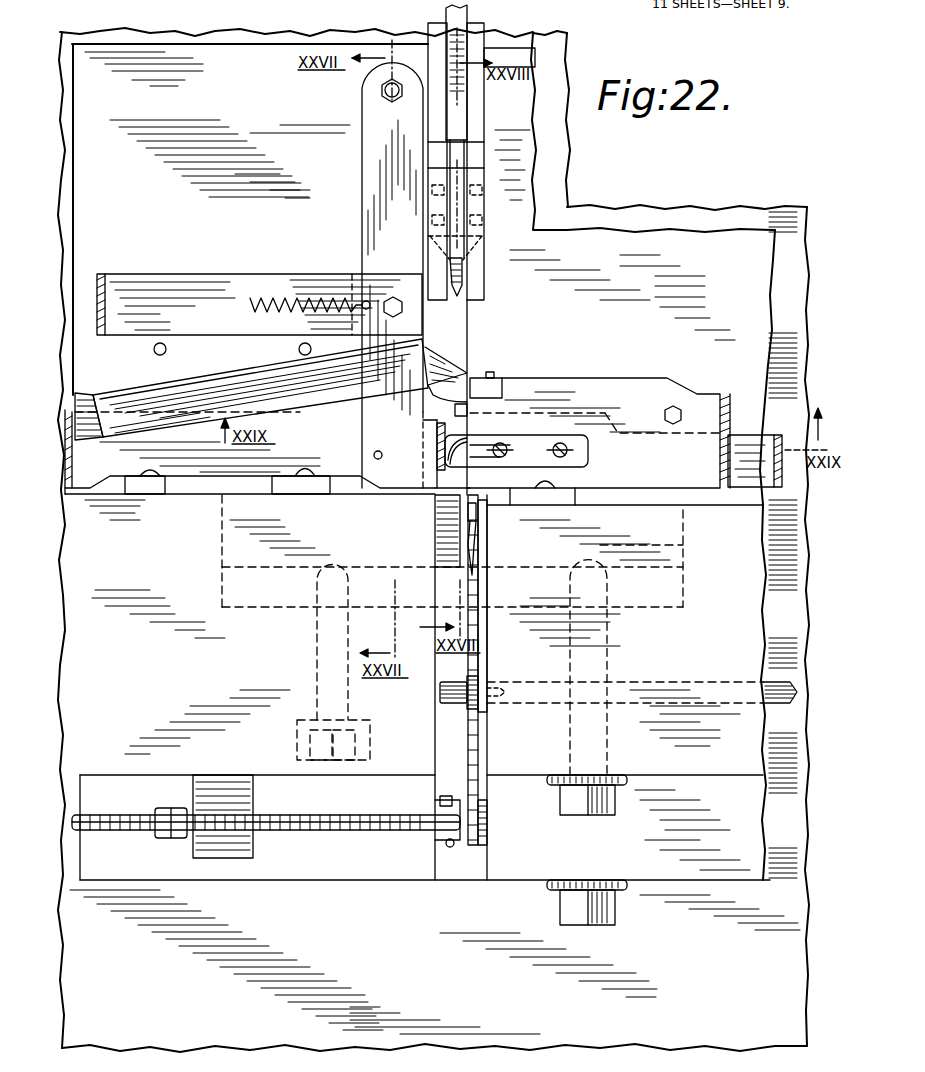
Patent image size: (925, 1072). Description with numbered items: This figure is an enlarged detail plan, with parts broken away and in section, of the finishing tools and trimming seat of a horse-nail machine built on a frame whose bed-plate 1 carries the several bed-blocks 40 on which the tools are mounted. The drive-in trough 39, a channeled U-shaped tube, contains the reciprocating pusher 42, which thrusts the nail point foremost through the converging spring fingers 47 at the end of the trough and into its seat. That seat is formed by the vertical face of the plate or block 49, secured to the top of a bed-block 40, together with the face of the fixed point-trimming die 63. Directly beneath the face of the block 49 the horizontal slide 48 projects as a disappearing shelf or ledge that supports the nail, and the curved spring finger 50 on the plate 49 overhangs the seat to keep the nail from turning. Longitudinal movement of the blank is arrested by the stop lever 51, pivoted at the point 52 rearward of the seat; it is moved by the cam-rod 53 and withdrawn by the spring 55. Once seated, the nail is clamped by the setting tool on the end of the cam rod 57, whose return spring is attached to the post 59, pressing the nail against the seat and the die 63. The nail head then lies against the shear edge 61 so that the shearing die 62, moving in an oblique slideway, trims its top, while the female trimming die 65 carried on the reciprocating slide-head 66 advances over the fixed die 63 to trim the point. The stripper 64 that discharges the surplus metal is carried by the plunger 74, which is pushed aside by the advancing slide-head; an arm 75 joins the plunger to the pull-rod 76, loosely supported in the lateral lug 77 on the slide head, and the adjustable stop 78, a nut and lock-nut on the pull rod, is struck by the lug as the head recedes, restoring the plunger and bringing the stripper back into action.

The bed-plate 1 is at (700, 214).
The drive-in trough 39 is at (476, 34).
The bed-block 40 is at (435, 543).
The reciprocating pusher 42 is at (463, 15).
The converging fingers 47 is at (455, 298).
The horizontal slide 48 is at (763, 445).
The plate or block 49 is at (625, 388).
The curved finger 50 is at (485, 445).
The stop lever 51 is at (362, 170).
The pivot point 52 is at (381, 92).
The cam-rod 53 is at (178, 286).
The spring 55 is at (258, 296).
The cam rod with clamping or setting tool 57 is at (250, 452).
The post 59 is at (381, 458).
The shear edge 61 is at (477, 385).
The shearing die 62 is at (440, 362).
The fixed point-trimming die 63 is at (478, 523).
The stripper 64 is at (480, 588).
The female trimming die 65 is at (442, 522).
The slide-head 66 is at (425, 687).
The push rod or plunger 74 is at (450, 704).
The arm 75 is at (470, 757).
The pull-rod 76 is at (380, 832).
The lateral lug 77 is at (228, 858).
The adjustable stop 78 is at (172, 840).